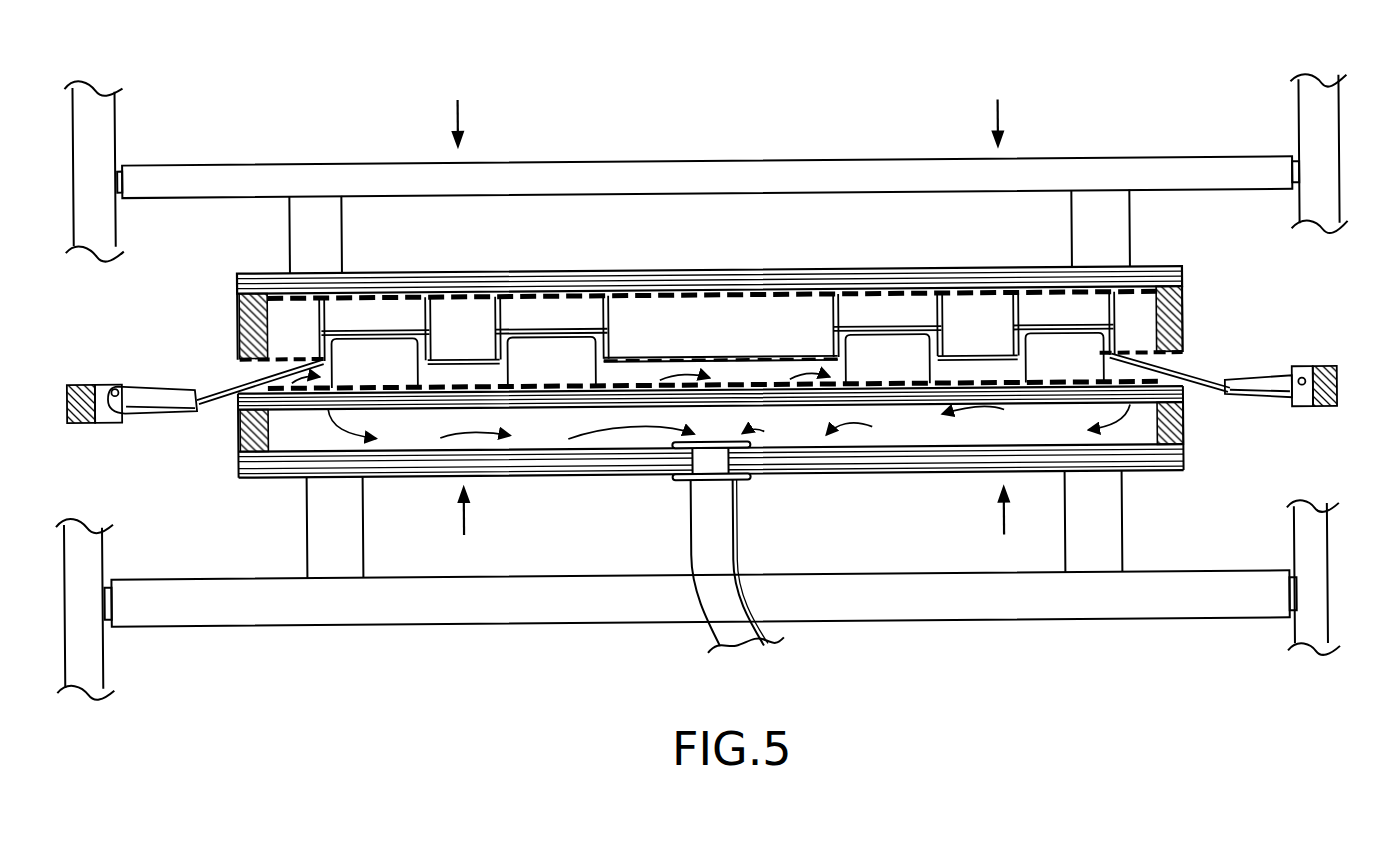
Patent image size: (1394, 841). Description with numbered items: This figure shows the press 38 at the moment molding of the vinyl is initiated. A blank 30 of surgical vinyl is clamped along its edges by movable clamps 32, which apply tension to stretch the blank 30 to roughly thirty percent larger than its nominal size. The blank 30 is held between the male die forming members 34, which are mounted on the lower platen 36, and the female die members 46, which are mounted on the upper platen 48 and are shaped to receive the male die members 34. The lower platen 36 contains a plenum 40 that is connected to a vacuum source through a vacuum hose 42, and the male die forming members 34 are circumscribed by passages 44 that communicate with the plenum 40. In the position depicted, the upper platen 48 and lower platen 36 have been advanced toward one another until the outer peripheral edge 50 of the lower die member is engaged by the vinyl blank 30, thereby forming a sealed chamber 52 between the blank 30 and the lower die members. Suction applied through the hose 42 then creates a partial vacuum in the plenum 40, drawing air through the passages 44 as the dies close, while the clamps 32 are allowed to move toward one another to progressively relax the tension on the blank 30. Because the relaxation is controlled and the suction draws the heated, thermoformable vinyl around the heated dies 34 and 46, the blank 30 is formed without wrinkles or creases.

The blank 30 is at (1125, 368).
The movable clamps 32 is at (148, 410).
The male die forming member 34 is at (926, 364).
The lower platen 36 is at (1186, 396).
The press 38 is at (1326, 126).
The plenum 40 is at (1052, 447).
The vacuum hose 42 is at (714, 550).
The passages 44 is at (716, 412).
The female die members 46 is at (562, 350).
The upper platen 48 is at (1166, 272).
The outer peripheral edge 50 is at (1228, 384).
The sealed chamber 52 is at (452, 370).